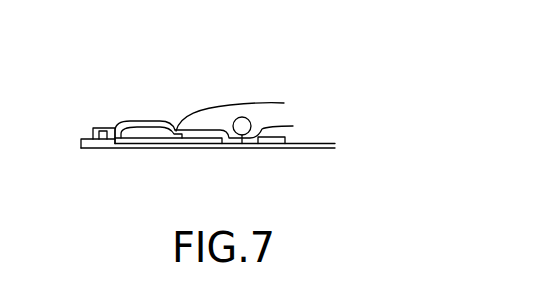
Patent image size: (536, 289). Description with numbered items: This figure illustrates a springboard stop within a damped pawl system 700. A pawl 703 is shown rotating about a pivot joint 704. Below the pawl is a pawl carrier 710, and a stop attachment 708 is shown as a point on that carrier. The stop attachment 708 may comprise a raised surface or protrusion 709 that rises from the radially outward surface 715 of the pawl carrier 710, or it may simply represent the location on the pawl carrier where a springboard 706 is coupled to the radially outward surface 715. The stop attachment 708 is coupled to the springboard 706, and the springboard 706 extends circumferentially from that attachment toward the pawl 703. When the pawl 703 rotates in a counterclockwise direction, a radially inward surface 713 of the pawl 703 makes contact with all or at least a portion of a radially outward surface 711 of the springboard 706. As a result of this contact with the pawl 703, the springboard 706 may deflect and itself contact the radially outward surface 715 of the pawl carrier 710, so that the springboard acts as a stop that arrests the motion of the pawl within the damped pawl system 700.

The damped pawl system 700 is at (363, 76).
The pawl 703 is at (283, 103).
The pivot joint 704 is at (242, 144).
The springboard 706 is at (147, 121).
The stop attachment 708 is at (93, 148).
The raised surface or protrusion 709 is at (103, 131).
The pawl carrier 710 is at (173, 148).
The radially outward surface of springboard 711 is at (178, 130).
The radially inward surface of pawl 713 is at (200, 131).
The radially outward surface of pawl carrier 715 is at (92, 139).